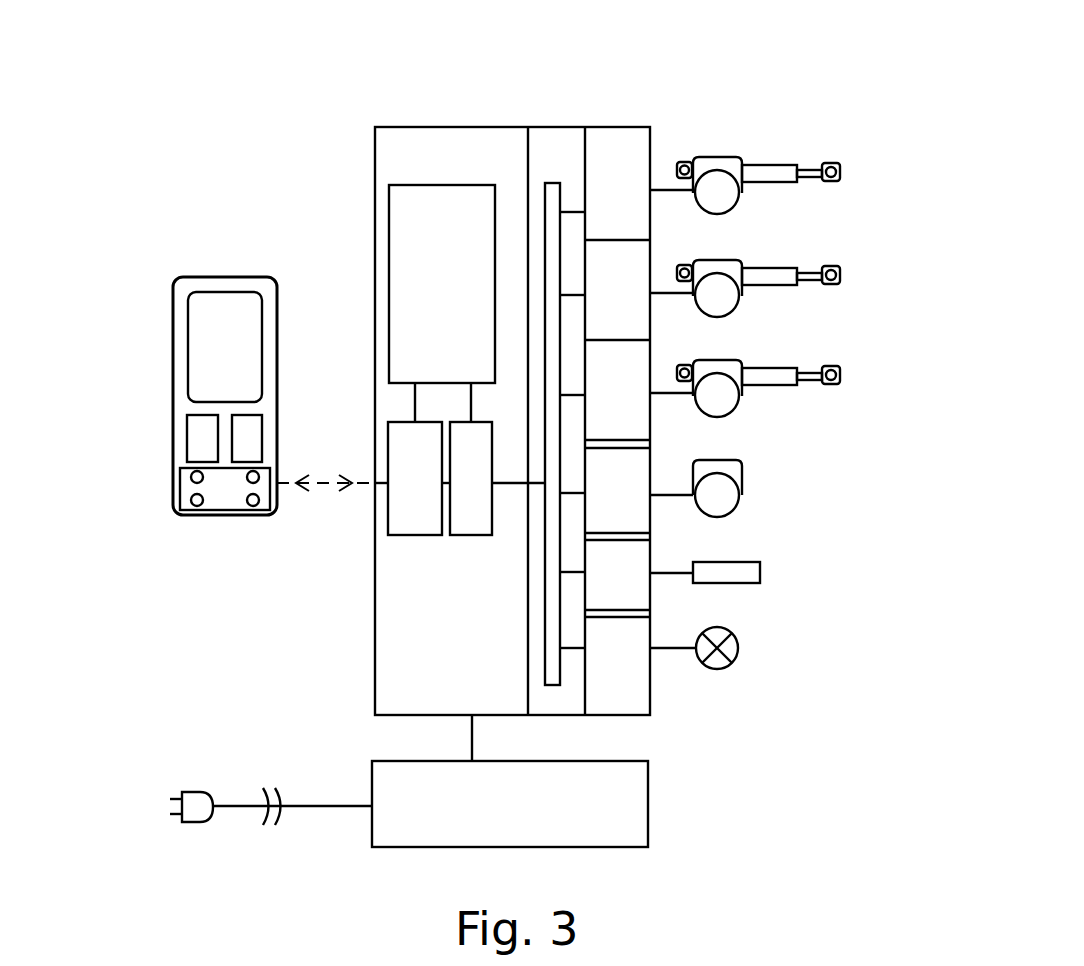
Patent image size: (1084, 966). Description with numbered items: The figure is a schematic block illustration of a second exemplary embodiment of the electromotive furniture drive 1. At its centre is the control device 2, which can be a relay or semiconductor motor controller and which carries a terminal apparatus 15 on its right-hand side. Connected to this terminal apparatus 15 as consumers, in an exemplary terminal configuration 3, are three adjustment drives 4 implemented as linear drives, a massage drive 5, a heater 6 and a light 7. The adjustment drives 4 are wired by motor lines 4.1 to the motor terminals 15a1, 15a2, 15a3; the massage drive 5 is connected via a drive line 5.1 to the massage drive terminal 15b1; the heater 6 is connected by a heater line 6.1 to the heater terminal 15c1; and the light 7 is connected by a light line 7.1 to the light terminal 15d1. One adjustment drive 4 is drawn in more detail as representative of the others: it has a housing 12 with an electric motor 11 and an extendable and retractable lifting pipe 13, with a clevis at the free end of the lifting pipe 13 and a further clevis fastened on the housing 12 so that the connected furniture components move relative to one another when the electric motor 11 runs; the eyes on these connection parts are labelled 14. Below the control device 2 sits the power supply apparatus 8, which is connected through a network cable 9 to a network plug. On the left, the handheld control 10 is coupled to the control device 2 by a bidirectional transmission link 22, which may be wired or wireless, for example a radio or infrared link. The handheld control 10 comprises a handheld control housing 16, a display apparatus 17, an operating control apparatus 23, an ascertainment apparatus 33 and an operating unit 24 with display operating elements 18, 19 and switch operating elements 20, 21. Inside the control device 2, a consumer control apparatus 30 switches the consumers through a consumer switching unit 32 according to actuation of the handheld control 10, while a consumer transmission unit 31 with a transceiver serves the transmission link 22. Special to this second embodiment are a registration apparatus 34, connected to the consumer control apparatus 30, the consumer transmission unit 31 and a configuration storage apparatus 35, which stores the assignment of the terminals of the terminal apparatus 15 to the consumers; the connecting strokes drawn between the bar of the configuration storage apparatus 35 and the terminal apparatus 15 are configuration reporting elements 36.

The electromotive furniture drive 1 is at (333, 85).
The control device 2 is at (405, 127).
The terminal configuration 3 is at (712, 80).
The adjustment drive 4 is at (754, 257).
The motor line 4.1 is at (667, 192).
The massage drive 5 is at (742, 473).
The drive line 5.1 is at (667, 497).
The heater 6 is at (760, 583).
The heater line 6.1 is at (667, 575).
The light 7 is at (735, 660).
The light line 7.1 is at (667, 652).
The power supply apparatus 8 is at (368, 782).
The network cable 9 is at (237, 800).
The handheld control 10 is at (246, 272).
The electric motor 11 is at (717, 190).
The housing 12 is at (765, 165).
The lifting pipe 13 is at (800, 170).
The fastening eye 14 is at (684, 160).
The terminal apparatus 15 is at (617, 358).
The motor terminal 15a1 is at (620, 191).
The motor terminal 15a2 is at (620, 295).
The motor terminal 15a3 is at (620, 395).
The massage drive terminal 15b1 is at (620, 495).
The heater terminal 15c1 is at (620, 573).
The light terminal 15d1 is at (620, 650).
The handheld control housing 16 is at (278, 348).
The display apparatus 17 is at (188, 335).
The display operating element 18 is at (192, 475).
The display operating element 19 is at (258, 470).
The switch operating element 20 is at (195, 504).
The switch operating element 21 is at (255, 504).
The transmission link 22 is at (311, 486).
The operating control apparatus 23 is at (187, 430).
The operating unit 24 is at (180, 495).
The consumer control apparatus 30 is at (442, 303).
The consumer transmission unit 31 is at (415, 478).
The consumer switching unit 32 is at (537, 165).
The ascertainment apparatus 33 is at (262, 423).
The registration apparatus 34 is at (471, 478).
The configuration storage apparatus 35 is at (555, 197).
The configuration reporting element 36 is at (572, 185).